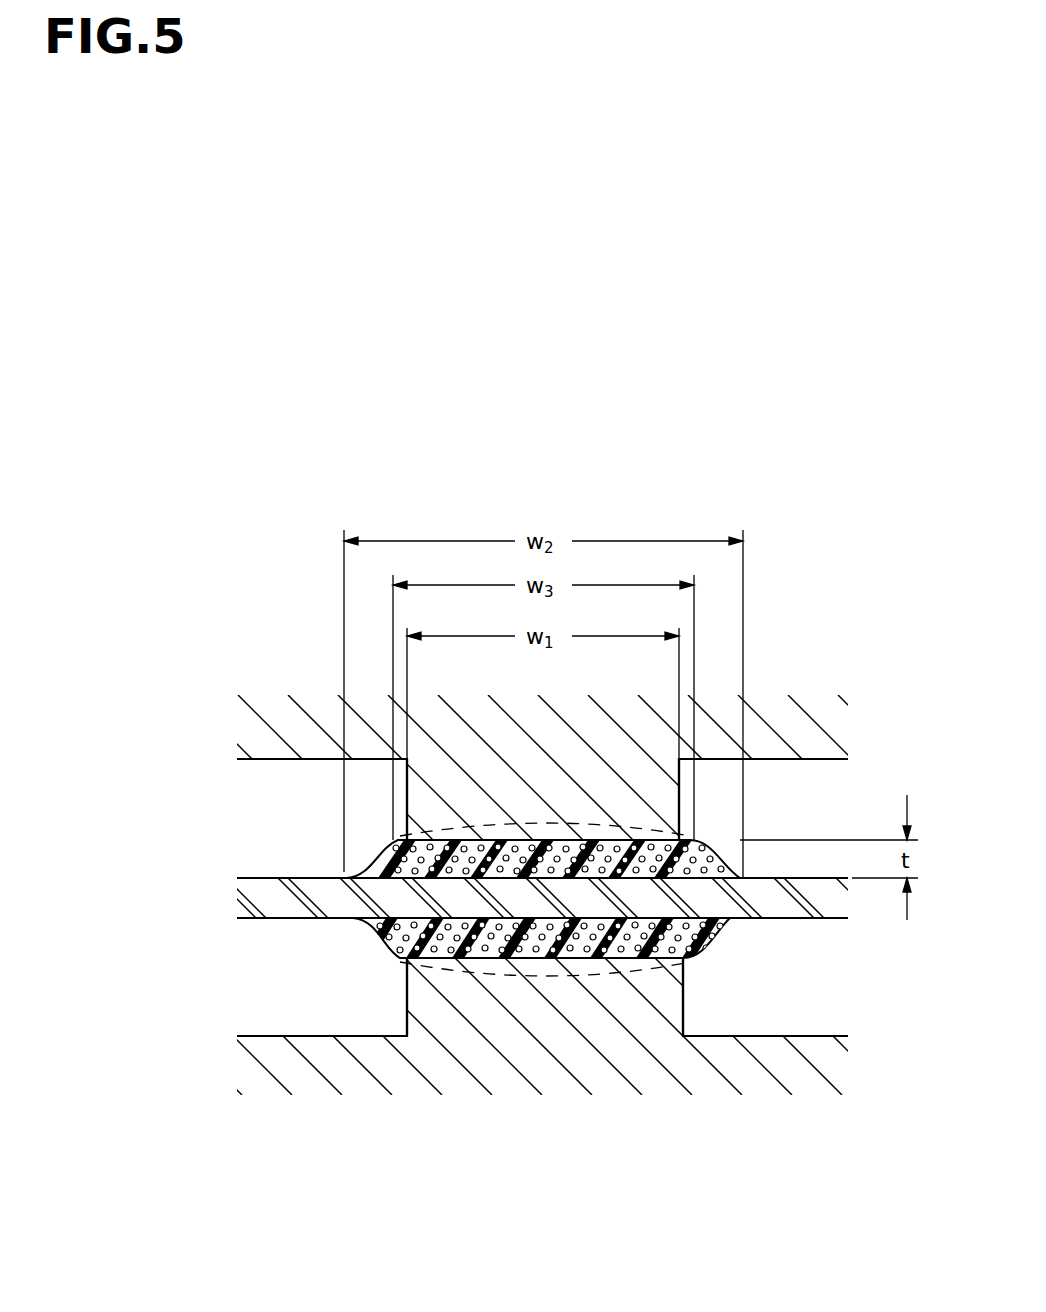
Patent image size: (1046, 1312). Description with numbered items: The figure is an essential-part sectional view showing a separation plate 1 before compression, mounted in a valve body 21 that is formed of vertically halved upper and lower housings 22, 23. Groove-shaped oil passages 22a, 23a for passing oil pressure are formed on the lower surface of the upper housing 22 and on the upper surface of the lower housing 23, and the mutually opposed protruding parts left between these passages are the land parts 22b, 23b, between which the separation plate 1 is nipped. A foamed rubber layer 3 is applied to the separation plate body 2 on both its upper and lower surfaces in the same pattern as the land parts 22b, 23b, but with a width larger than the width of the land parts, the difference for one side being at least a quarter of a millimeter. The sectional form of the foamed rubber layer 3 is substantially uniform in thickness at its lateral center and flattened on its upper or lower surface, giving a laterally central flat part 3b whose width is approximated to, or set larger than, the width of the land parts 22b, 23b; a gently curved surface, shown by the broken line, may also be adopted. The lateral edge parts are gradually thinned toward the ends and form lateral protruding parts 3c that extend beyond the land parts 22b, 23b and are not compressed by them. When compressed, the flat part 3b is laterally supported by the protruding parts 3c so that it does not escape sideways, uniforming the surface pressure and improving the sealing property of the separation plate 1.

The separation plate 1 is at (248, 868).
The separation plate body 2 is at (823, 908).
The foamed rubber layer 3 is at (483, 840).
The flat part 3b is at (632, 840).
The lateral protruding parts 3c is at (377, 843).
The valve body 21 is at (258, 704).
The upper housing 22 is at (808, 748).
The oil passage 22a is at (316, 826).
The land part 22b is at (548, 820).
The lower housing 23 is at (823, 1058).
The oil passage 23a is at (322, 993).
The land part 23b is at (583, 965).